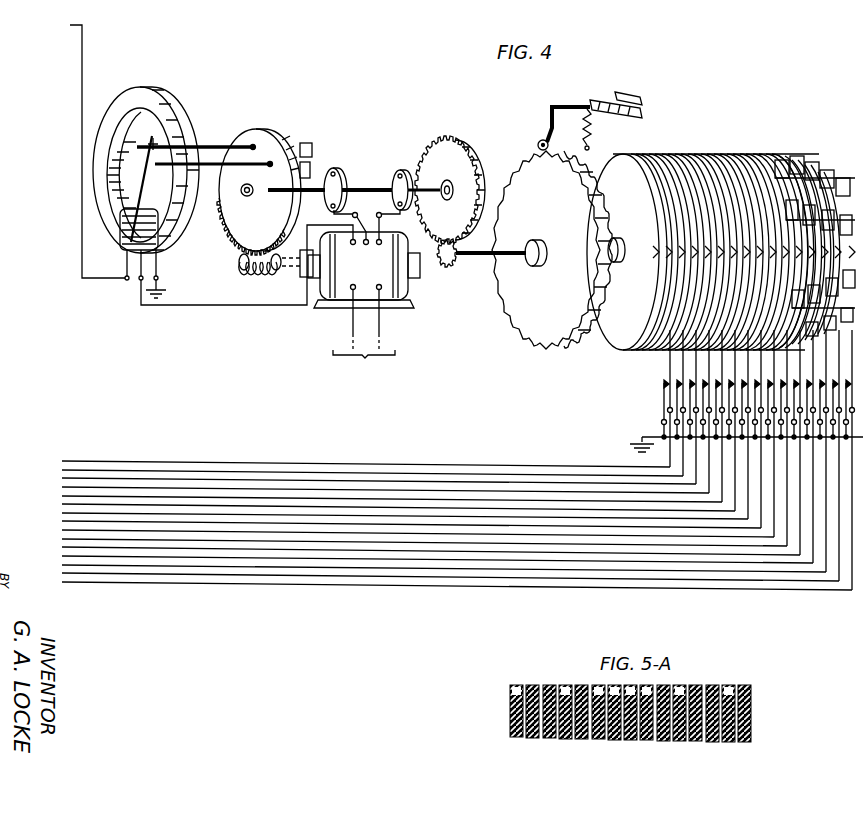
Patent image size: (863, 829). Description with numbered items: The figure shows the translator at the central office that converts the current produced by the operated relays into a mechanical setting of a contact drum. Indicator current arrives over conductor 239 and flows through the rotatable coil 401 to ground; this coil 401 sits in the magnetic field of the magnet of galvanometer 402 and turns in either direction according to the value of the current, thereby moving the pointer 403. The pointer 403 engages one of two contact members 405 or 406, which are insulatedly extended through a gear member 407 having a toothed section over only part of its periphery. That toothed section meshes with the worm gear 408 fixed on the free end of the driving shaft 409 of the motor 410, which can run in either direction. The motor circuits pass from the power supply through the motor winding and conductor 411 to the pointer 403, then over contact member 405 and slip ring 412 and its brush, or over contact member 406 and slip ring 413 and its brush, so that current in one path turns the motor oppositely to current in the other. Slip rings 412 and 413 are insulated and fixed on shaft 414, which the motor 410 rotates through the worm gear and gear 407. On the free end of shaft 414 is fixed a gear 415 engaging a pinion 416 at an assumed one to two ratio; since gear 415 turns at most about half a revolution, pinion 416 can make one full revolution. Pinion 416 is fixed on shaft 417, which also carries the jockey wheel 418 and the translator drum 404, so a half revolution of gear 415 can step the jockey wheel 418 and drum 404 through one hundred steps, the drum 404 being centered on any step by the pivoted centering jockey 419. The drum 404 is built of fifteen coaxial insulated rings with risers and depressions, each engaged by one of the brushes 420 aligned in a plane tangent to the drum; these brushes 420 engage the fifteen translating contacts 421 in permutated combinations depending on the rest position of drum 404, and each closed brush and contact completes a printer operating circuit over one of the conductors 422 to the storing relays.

The conductor 239 is at (84, 62).
The rotatable coil 401 is at (120, 230).
The galvanometer 402 is at (186, 112).
The pointer 403 is at (147, 166).
The translator drum 404 is at (695, 158).
The contact member 405 is at (222, 145).
The contact member 406 is at (209, 170).
The gear member 407 is at (278, 128).
The worm gear 408 is at (250, 268).
The driving shaft 409 is at (282, 268).
The motor 410 is at (403, 280).
The conductor 411 is at (156, 300).
The slip ring 412 is at (398, 170).
The slip ring 413 is at (336, 168).
The shaft 414 is at (364, 187).
The gear 415 is at (470, 160).
The pinion 416 is at (451, 262).
The shaft 417 is at (486, 258).
The jockey wheel 418 is at (531, 344).
The pivoted centering jockey 419 is at (540, 141).
The brushes 420 is at (857, 369).
The translating contacts 421 is at (857, 395).
The conductors 422 is at (457, 512).